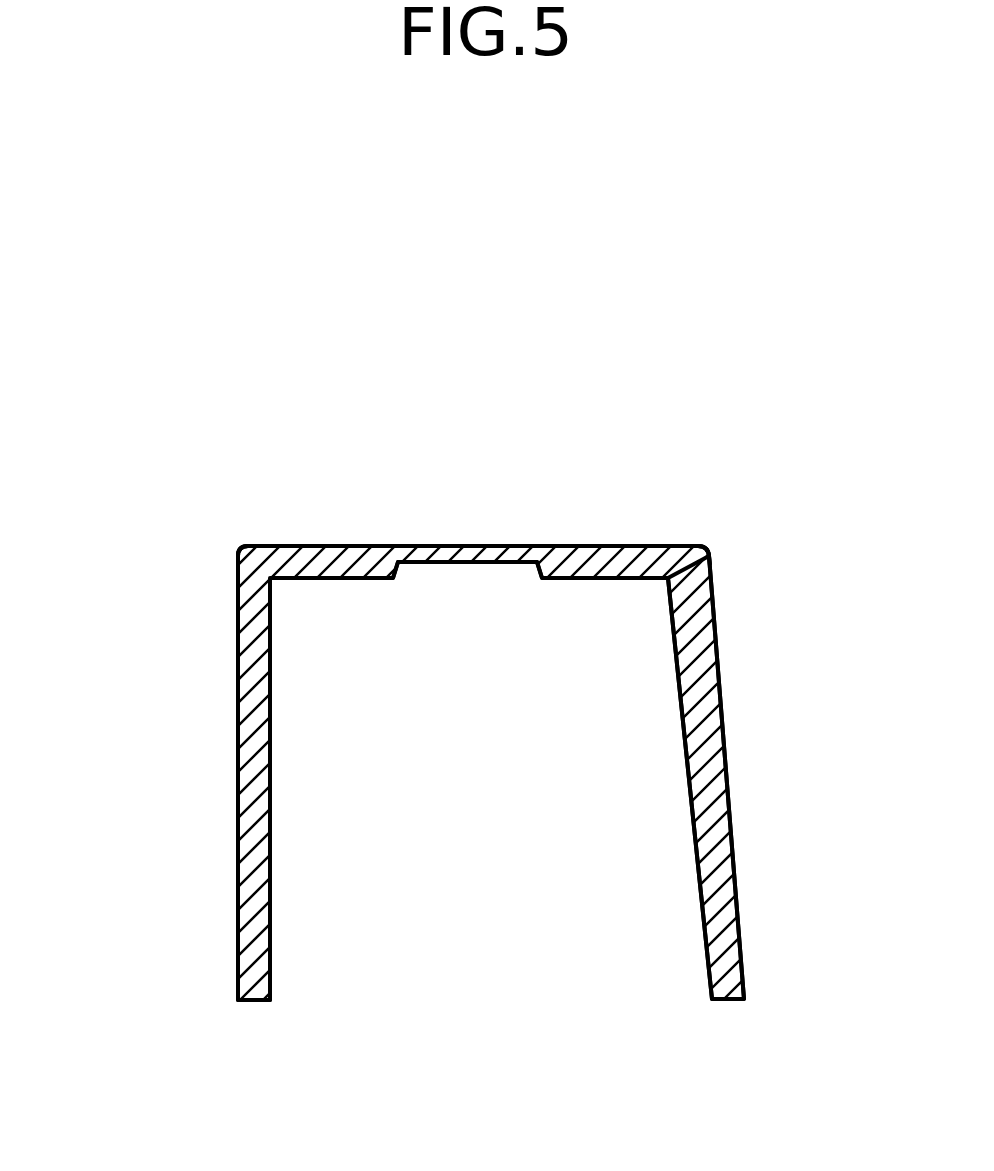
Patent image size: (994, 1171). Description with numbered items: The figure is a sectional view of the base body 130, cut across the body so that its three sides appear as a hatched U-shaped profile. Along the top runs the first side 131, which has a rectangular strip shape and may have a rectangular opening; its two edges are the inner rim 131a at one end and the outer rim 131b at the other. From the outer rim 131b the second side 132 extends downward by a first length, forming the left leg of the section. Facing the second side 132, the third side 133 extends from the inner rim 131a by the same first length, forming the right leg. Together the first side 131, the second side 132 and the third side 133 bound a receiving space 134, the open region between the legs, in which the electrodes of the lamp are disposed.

The base body 130 is at (583, 412).
The first side 131 is at (604, 530).
The inner rim 131a is at (710, 572).
The outer rim 131b is at (238, 548).
The second side 132 is at (210, 784).
The third side 133 is at (752, 780).
The receiving space 134 is at (510, 788).